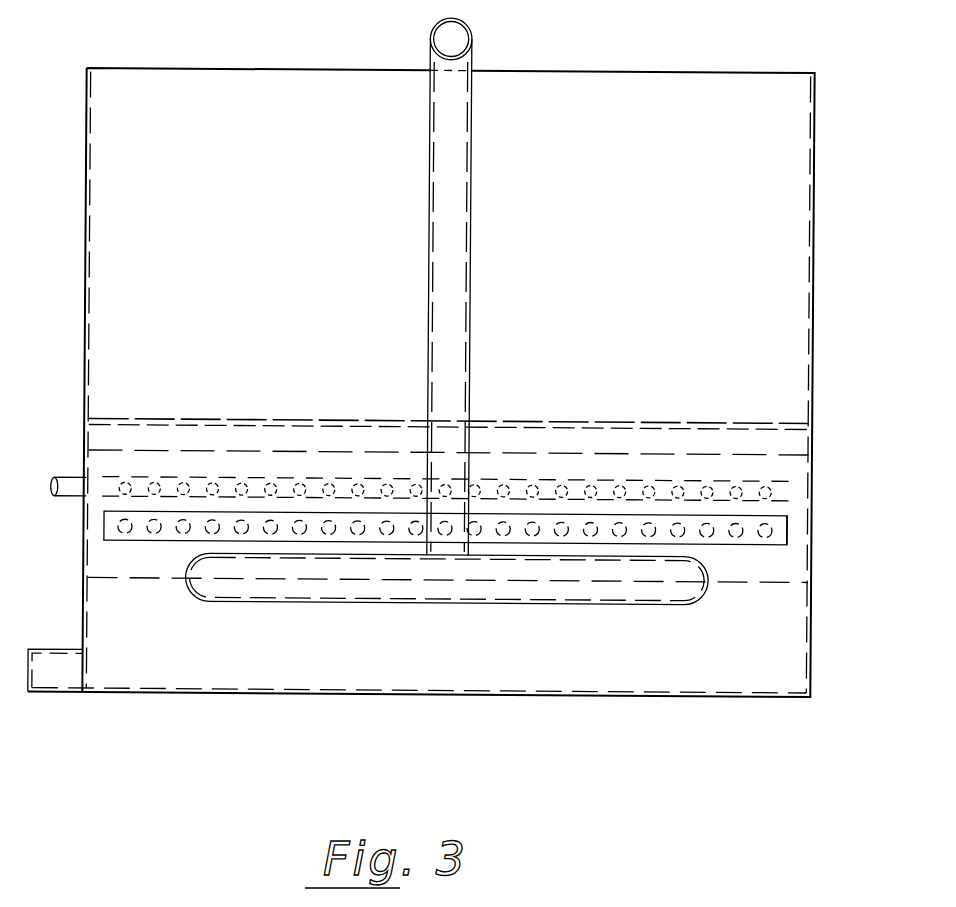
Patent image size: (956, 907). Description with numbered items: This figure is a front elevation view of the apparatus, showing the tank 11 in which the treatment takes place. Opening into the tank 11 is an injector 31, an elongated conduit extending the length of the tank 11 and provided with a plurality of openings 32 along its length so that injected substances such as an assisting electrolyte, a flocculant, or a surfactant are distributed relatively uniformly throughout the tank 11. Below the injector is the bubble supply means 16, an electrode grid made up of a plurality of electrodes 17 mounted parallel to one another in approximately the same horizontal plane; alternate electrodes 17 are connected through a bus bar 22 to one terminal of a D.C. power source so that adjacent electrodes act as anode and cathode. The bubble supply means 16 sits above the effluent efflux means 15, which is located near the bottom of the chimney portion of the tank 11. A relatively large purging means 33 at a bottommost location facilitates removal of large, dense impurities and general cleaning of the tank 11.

The tank 11 is at (76, 117).
The injector 31 is at (66, 481).
The openings 32 is at (766, 478).
The bubble supply means 16 is at (96, 531).
The bus bar 22 is at (788, 525).
The electrode 17 is at (767, 534).
The effluent efflux means 15 is at (180, 594).
The purging means 33 is at (57, 698).